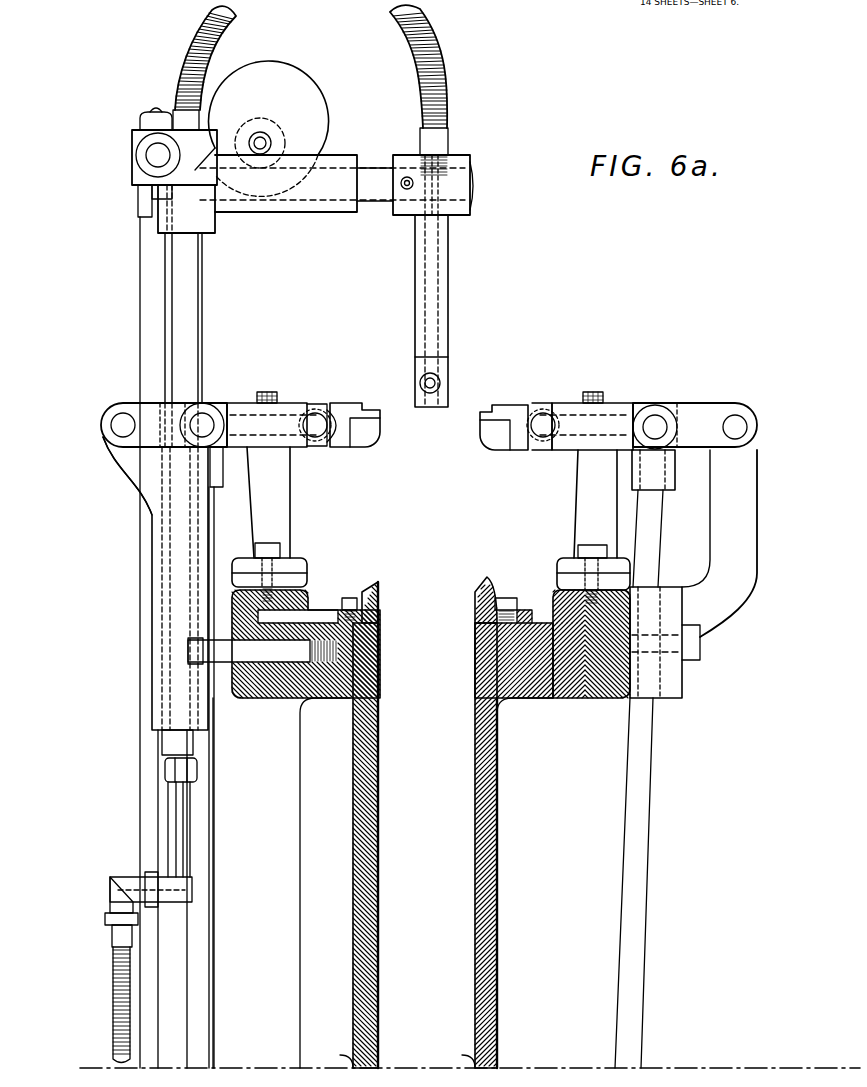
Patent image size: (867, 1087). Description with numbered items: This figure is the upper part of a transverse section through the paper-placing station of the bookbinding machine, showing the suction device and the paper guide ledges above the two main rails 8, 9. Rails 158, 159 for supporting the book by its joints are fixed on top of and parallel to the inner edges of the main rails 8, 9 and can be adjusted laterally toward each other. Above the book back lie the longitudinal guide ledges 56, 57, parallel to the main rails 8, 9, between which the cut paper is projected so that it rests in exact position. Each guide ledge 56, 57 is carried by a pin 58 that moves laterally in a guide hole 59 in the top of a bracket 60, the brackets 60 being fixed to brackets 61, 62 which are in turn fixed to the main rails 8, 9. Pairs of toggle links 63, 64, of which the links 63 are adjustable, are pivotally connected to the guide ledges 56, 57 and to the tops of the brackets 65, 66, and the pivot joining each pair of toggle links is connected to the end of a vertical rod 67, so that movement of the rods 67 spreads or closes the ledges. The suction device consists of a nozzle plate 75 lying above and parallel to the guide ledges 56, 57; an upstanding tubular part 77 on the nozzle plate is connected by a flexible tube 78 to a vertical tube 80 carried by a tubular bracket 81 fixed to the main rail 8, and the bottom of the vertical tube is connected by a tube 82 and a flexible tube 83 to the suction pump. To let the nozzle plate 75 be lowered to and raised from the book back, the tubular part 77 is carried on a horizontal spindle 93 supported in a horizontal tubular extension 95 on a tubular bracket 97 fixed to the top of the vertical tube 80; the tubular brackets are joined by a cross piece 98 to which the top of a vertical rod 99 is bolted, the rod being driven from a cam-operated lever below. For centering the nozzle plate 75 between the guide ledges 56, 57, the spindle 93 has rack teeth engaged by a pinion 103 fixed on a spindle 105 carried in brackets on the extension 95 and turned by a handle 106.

The main rail 8 is at (355, 740).
The main rail 9 is at (497, 748).
The guide ledge 56 is at (368, 406).
The guide ledge 57 is at (484, 408).
The pin 58 is at (328, 410).
The guide hole 59 is at (245, 415).
The bracket 60 is at (278, 510).
The bracket 61 is at (310, 590).
The bracket 62 is at (553, 590).
The toggle link 63 is at (318, 415).
The toggle link 64 is at (158, 418).
The bracket 65 is at (128, 465).
The bracket 66 is at (745, 533).
The vertical rod 67 is at (217, 493).
The nozzle plate 75 is at (438, 378).
The upstanding tubular part 77 is at (438, 253).
The flexible tube 78 is at (424, 58).
The vertical tube 80 is at (192, 262).
The tubular bracket 81 is at (183, 538).
The tube 82 is at (190, 800).
The flexible tube 83 is at (115, 1005).
The horizontal spindle 93 is at (377, 185).
The horizontal tubular extension 95 is at (342, 162).
The tubular bracket 97 is at (190, 195).
The cross piece 98 is at (150, 158).
The vertical rod 99 is at (138, 258).
The pinion 103 is at (282, 133).
The spindle 105 is at (260, 138).
The handle 106 is at (222, 106).
The rail 158 is at (372, 590).
The rail 159 is at (483, 600).